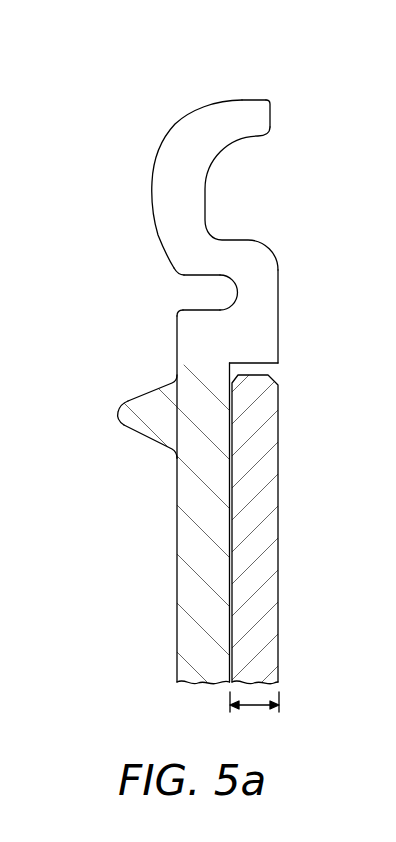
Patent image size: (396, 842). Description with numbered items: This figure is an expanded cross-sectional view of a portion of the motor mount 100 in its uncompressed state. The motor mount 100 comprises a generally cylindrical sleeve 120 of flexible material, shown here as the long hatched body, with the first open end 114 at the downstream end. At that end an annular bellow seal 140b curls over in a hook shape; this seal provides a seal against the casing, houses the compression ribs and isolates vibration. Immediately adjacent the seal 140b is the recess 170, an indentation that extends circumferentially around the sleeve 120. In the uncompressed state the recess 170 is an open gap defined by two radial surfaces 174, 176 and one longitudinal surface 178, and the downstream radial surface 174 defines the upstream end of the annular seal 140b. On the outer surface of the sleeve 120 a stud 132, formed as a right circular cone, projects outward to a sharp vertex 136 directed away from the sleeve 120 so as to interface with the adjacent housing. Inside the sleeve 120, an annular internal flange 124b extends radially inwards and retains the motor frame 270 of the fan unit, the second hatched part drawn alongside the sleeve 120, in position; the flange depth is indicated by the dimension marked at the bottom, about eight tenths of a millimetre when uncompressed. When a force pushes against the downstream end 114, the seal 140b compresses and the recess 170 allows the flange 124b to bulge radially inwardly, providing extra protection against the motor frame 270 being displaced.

The motor mount 100 is at (198, 421).
The bellow seal 140b is at (201, 108).
The first open end 114 is at (272, 100).
The recess 170 is at (225, 293).
The downstream radial surface 174 is at (179, 279).
The radial surface 176 is at (178, 309).
The longitudinal surface 178 is at (240, 301).
The sleeve 120 is at (198, 556).
The vertex 136 is at (118, 417).
The stud 132 is at (140, 438).
The flange 124b is at (252, 364).
The motor frame 270 is at (262, 531).